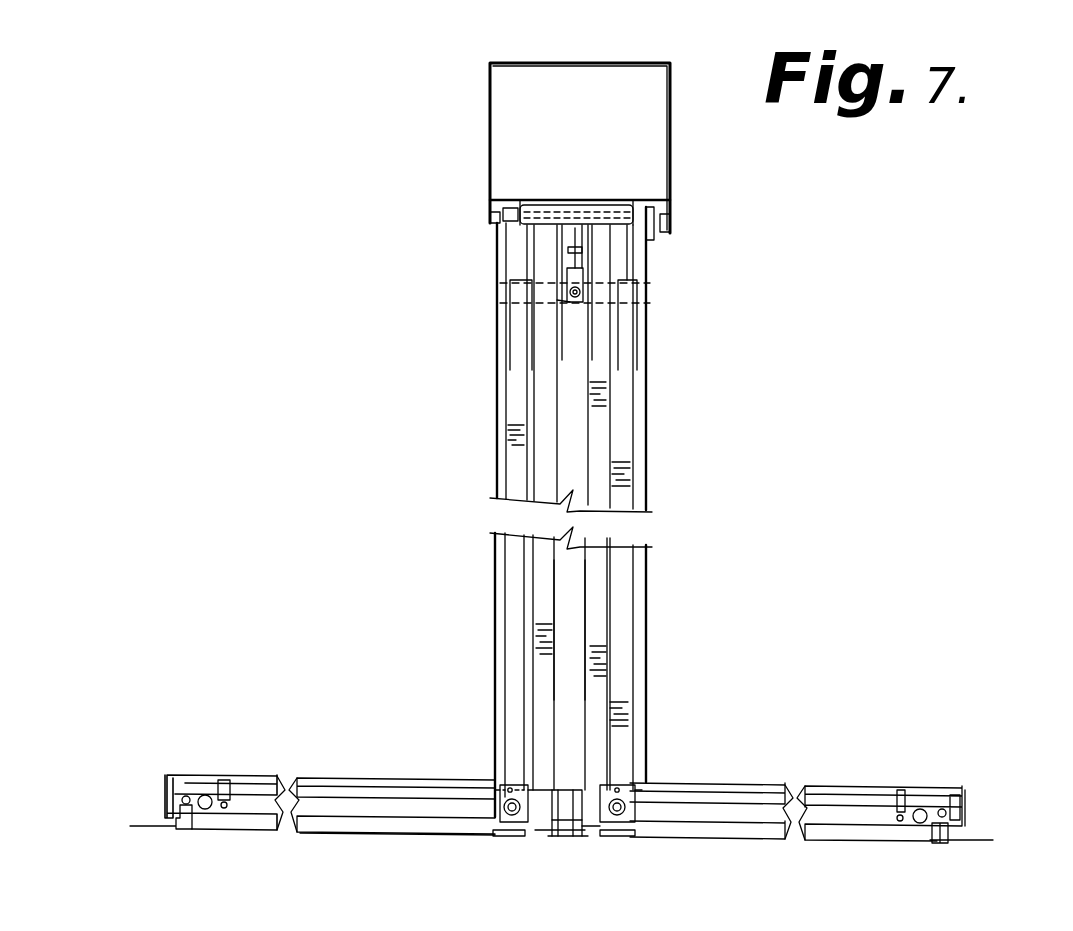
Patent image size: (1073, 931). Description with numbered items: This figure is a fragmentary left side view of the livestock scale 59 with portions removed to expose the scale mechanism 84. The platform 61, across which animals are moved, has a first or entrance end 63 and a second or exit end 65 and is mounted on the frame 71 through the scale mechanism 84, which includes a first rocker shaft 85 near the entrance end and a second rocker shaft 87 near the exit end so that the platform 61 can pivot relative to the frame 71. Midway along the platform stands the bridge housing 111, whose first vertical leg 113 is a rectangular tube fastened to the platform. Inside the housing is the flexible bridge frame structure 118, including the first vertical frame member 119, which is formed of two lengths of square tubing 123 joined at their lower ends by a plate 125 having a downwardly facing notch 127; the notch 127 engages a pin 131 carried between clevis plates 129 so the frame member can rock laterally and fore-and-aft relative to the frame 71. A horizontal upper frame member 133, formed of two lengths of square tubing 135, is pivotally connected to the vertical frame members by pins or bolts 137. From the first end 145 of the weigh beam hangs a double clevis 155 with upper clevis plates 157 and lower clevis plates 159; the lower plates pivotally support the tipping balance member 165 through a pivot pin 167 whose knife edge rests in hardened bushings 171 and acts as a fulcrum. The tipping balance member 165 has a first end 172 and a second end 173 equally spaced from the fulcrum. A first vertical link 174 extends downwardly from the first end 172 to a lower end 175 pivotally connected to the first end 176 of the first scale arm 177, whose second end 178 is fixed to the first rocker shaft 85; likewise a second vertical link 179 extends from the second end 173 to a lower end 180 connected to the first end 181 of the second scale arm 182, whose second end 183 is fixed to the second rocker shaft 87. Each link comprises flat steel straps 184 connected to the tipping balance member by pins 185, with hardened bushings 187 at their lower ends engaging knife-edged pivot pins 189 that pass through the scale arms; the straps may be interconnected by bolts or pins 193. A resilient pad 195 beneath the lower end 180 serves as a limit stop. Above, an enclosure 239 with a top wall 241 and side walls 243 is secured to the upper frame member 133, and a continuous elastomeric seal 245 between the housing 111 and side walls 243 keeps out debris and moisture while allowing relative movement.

The livestock scale 59 is at (776, 306).
The platform 61 is at (328, 778).
The first end 63 is at (167, 780).
The second end 65 is at (964, 795).
The frame 71 is at (978, 840).
The scale mechanism 84 is at (712, 858).
The first rocker shaft 85 is at (206, 795).
The second rocker shaft 87 is at (920, 808).
The bridge housing 111 is at (650, 402).
The first vertical leg 113 is at (650, 466).
The flexible bridge frame structure 118 is at (604, 598).
The first vertical frame member 119 is at (542, 582).
The square tubing 123 is at (536, 658).
The plate 125 is at (582, 786).
The notch 127 is at (567, 835).
The clevis plates 129 is at (554, 830).
The pin 131 is at (553, 795).
The upper frame member 133 is at (626, 200).
The square tubing 135 is at (620, 203).
The pins or bolts 137 is at (512, 212).
The first end 145 is at (573, 237).
The double clevis 155 is at (585, 278).
The upper clevis plates 157 is at (580, 240).
The lower clevis plates 159 is at (570, 302).
The tipping balance member 165 is at (560, 280).
The pivot pin 167 is at (582, 296).
The hardened bushings 171 is at (568, 286).
The first end 172 is at (540, 286).
The second end 173 is at (640, 284).
The first vertical link 174 is at (504, 460).
The lower end 175 is at (506, 832).
The first end 176 is at (492, 796).
The first scale arm 177 is at (352, 832).
The second end 178 is at (170, 820).
The second vertical link 179 is at (640, 368).
The lower end 180 is at (612, 826).
The first end 181 is at (635, 796).
The second scale arm 182 is at (744, 785).
The second end 183 is at (948, 830).
The flat steel straps 184 is at (512, 484).
The pins 185 is at (520, 292).
The hardened bushings 187 is at (476, 799).
The pivot pins 189 is at (503, 814).
The bolts or pins 193 is at (626, 802).
The second pad of resilient material 195 is at (618, 826).
The enclosure 239 is at (490, 96).
The top wall 241 is at (637, 63).
The side walls 243 is at (490, 124).
The continuous elastomeric seal 245 is at (495, 226).